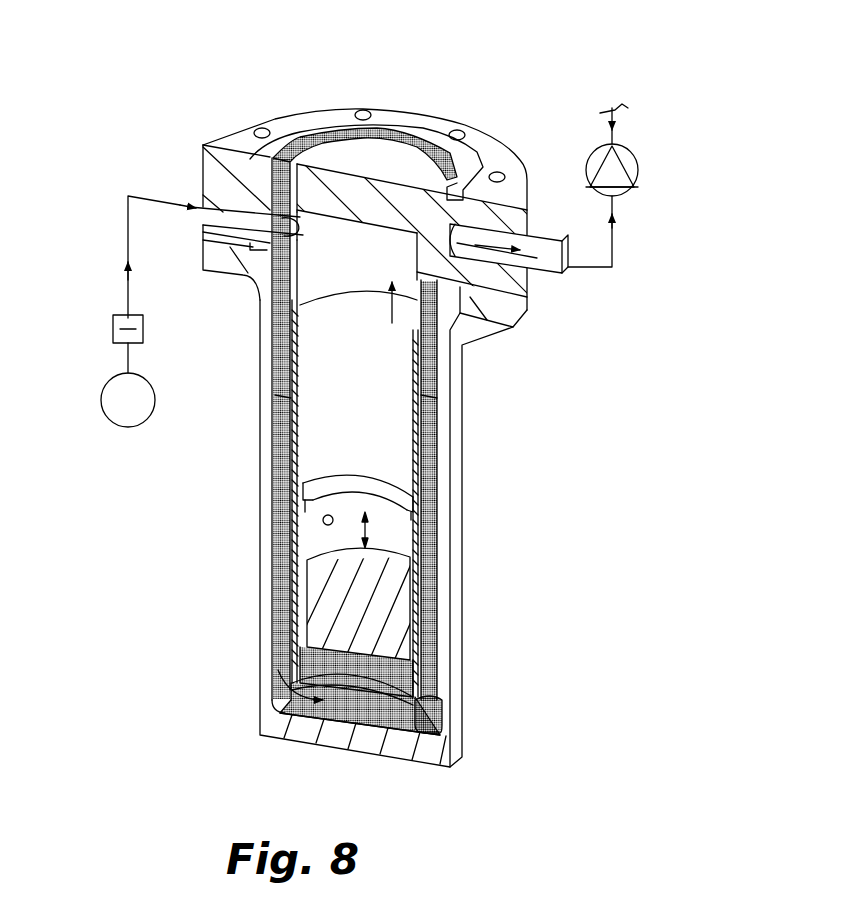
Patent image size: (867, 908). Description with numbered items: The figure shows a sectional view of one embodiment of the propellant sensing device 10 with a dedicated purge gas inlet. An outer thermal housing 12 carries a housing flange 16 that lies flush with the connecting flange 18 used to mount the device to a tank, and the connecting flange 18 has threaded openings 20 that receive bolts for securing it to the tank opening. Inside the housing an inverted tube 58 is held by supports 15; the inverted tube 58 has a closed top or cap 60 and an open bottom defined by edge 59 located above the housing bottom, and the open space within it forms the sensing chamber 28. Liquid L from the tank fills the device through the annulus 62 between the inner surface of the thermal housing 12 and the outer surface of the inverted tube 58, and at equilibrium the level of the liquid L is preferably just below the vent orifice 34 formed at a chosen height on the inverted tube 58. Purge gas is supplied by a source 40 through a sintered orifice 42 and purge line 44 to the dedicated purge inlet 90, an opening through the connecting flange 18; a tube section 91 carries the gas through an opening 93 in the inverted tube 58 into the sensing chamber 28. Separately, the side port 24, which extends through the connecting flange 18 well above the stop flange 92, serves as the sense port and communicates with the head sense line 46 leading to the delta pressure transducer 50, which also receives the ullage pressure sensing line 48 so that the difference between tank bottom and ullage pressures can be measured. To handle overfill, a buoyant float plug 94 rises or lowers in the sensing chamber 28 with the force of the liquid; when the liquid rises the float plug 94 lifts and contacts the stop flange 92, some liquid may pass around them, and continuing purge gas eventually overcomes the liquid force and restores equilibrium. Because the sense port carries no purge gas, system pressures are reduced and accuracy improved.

The device 10 is at (165, 78).
The thermal housing 12 is at (258, 532).
The supports 15 is at (273, 368).
The housing flange 16 is at (223, 278).
The connecting flange 18 is at (225, 142).
The threaded openings 20 is at (262, 128).
The side port 24 is at (543, 237).
The sensing chamber 28 is at (356, 403).
The vent orifice 34 is at (323, 525).
The purge gas source 40 is at (102, 412).
The sintered orifice 42 is at (113, 330).
The purge line 44 is at (128, 242).
The head sense line 46 is at (613, 250).
The ullage pressure sensing line 48 is at (613, 125).
The delta pressure transducer 50 is at (633, 188).
The inverted tube 58 is at (275, 400).
The open bottom edge 59 is at (410, 700).
The cap 60 is at (388, 148).
The annulus 62 is at (270, 470).
The purge inlet 90 is at (213, 190).
The tube section 91 is at (287, 130).
The stop flange 92 is at (317, 483).
The opening 93 is at (313, 227).
The float plug 94 is at (440, 575).
The liquid L is at (331, 200).